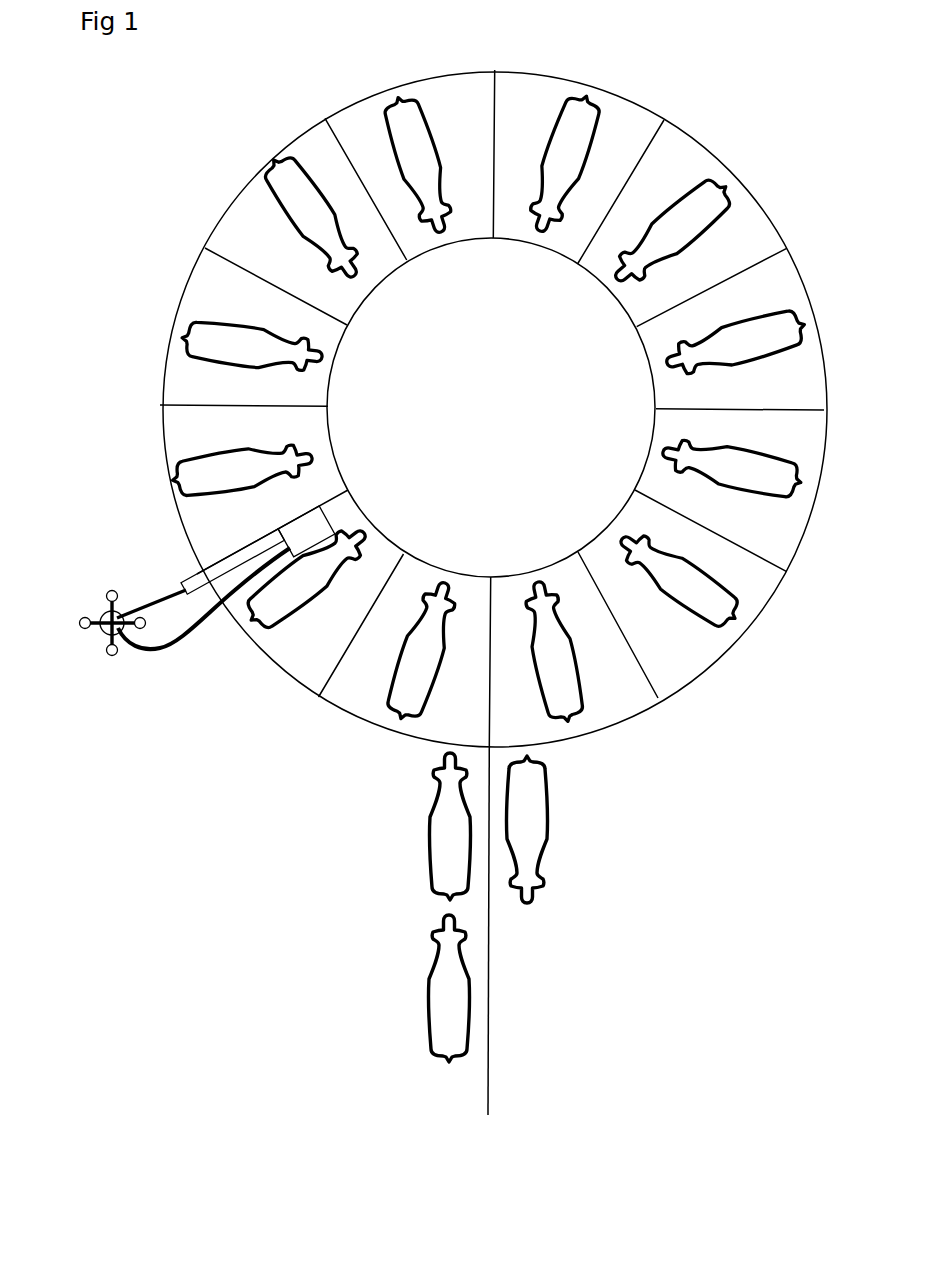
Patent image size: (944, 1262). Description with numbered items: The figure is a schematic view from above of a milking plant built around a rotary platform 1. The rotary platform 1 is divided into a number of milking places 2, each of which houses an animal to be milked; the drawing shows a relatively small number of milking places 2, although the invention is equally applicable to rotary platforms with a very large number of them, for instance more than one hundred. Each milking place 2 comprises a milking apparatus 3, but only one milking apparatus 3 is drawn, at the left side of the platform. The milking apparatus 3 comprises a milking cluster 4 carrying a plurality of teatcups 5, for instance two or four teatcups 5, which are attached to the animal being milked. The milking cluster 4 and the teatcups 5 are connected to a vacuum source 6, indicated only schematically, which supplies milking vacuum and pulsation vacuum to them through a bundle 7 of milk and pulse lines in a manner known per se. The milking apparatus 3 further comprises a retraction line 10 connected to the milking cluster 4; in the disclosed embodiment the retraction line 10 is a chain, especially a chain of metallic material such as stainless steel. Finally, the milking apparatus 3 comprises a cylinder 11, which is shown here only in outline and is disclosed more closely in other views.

The rotary platform 1 is at (752, 141).
The milking place 2 is at (457, 141).
The milking apparatus 3 is at (301, 521).
The milking cluster 4 is at (90, 615).
The teatcups 5 is at (96, 640).
The vacuum source 6 is at (312, 530).
The bundle of milk and pulse lines 7 is at (178, 643).
The retraction line 10 is at (120, 602).
The cylinder 11 is at (247, 553).